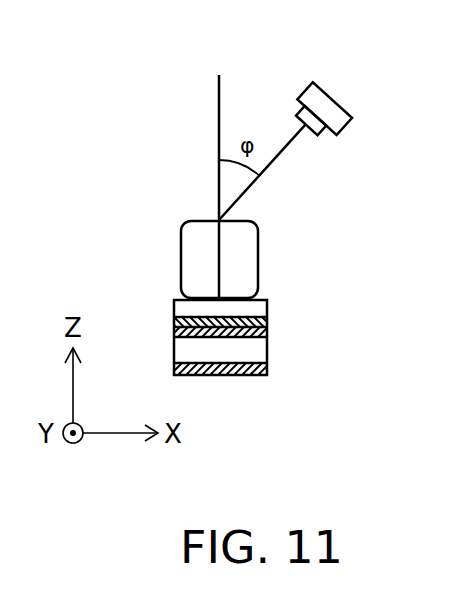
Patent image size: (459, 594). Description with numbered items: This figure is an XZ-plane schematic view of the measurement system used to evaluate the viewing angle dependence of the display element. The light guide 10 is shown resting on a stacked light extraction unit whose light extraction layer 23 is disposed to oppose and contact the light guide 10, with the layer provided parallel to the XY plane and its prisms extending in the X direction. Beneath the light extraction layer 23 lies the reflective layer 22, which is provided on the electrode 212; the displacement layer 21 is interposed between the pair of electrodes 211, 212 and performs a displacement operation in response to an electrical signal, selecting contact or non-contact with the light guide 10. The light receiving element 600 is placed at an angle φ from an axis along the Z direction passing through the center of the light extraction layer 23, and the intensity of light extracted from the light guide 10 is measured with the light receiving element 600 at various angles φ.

The light receiving element 600 is at (323, 108).
The light guide 10 is at (238, 260).
The light extraction layer 23 is at (247, 310).
The reflective layer 22 is at (250, 320).
The electrode 212 is at (255, 330).
The displacement layer 21 is at (253, 350).
The electrode 211 is at (260, 372).